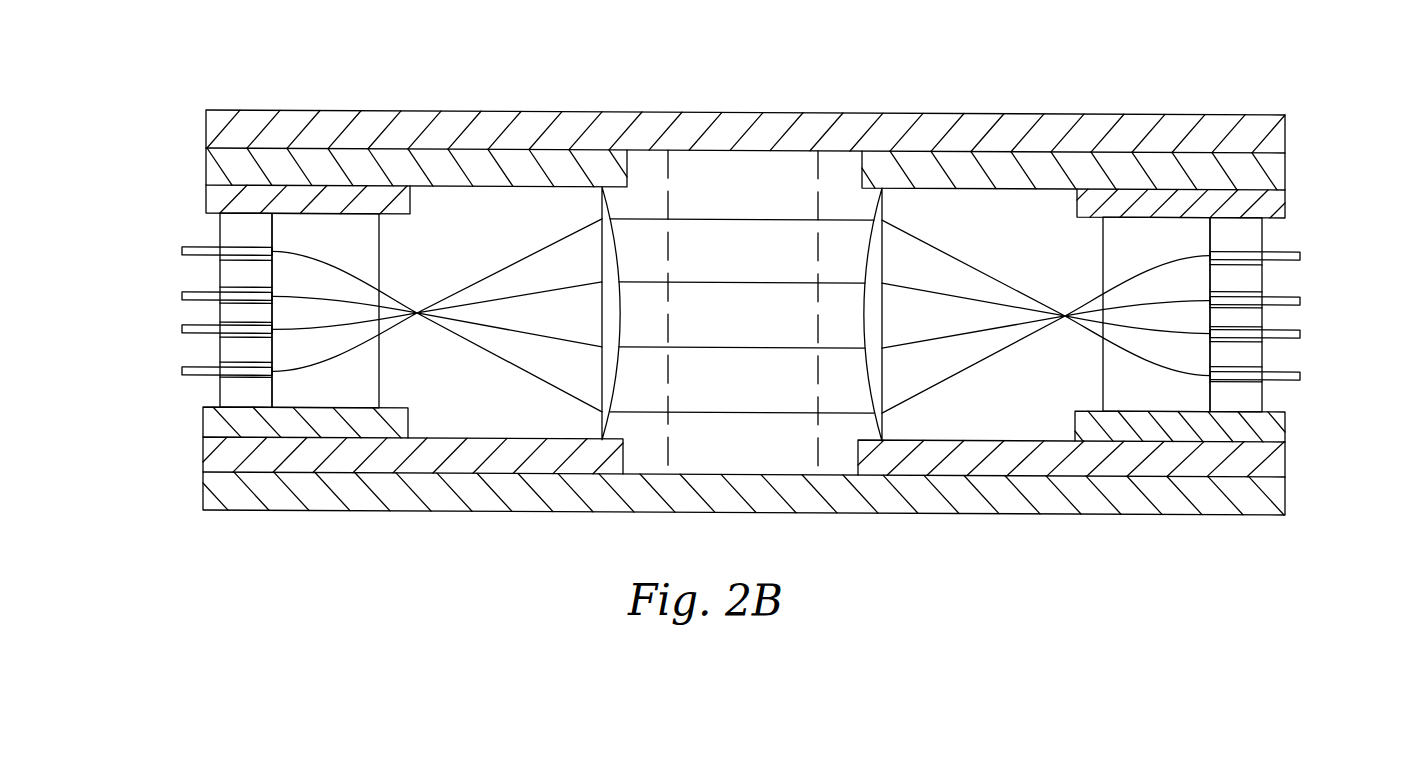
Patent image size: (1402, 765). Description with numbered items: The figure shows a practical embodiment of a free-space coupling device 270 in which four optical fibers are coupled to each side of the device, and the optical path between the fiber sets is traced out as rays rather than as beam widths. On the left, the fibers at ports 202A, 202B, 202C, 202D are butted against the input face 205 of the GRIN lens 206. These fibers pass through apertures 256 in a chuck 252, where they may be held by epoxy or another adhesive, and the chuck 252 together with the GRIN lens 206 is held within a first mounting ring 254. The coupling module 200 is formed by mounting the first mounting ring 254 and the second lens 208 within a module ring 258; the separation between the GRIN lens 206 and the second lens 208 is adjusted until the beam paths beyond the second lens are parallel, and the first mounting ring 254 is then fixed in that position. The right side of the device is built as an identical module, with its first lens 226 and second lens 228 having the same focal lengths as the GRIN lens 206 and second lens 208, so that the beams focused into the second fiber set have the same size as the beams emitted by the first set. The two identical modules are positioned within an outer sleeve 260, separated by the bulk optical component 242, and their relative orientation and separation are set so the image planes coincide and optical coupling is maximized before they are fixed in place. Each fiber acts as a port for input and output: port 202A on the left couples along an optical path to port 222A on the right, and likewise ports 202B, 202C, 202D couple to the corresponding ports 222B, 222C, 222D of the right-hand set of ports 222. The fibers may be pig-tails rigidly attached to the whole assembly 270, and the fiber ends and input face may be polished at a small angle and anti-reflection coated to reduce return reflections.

The free-space coupling device 270 is at (420, 70).
The coupling module 200 is at (405, 230).
The ports 222 is at (1045, 206).
The bulk optical component 242 is at (740, 176).
The port 202A is at (183, 252).
The port 202B is at (183, 295).
The port 202C is at (183, 328).
The port 202D is at (183, 368).
The port 222A is at (1300, 253).
The port 222B is at (1300, 291).
The port 222C is at (1300, 330).
The port 222D is at (1300, 370).
The input face 205 is at (272, 392).
The GRIN lens 206 is at (362, 247).
The first lens 226 is at (1153, 246).
The second lens 208 is at (601, 200).
The second lens 228 is at (885, 205).
The chuck 252 is at (225, 228).
The first mounting ring 254 is at (204, 429).
The apertures 256 is at (217, 378).
The module ring 258 is at (218, 458).
The outer sleeve 260 is at (288, 503).